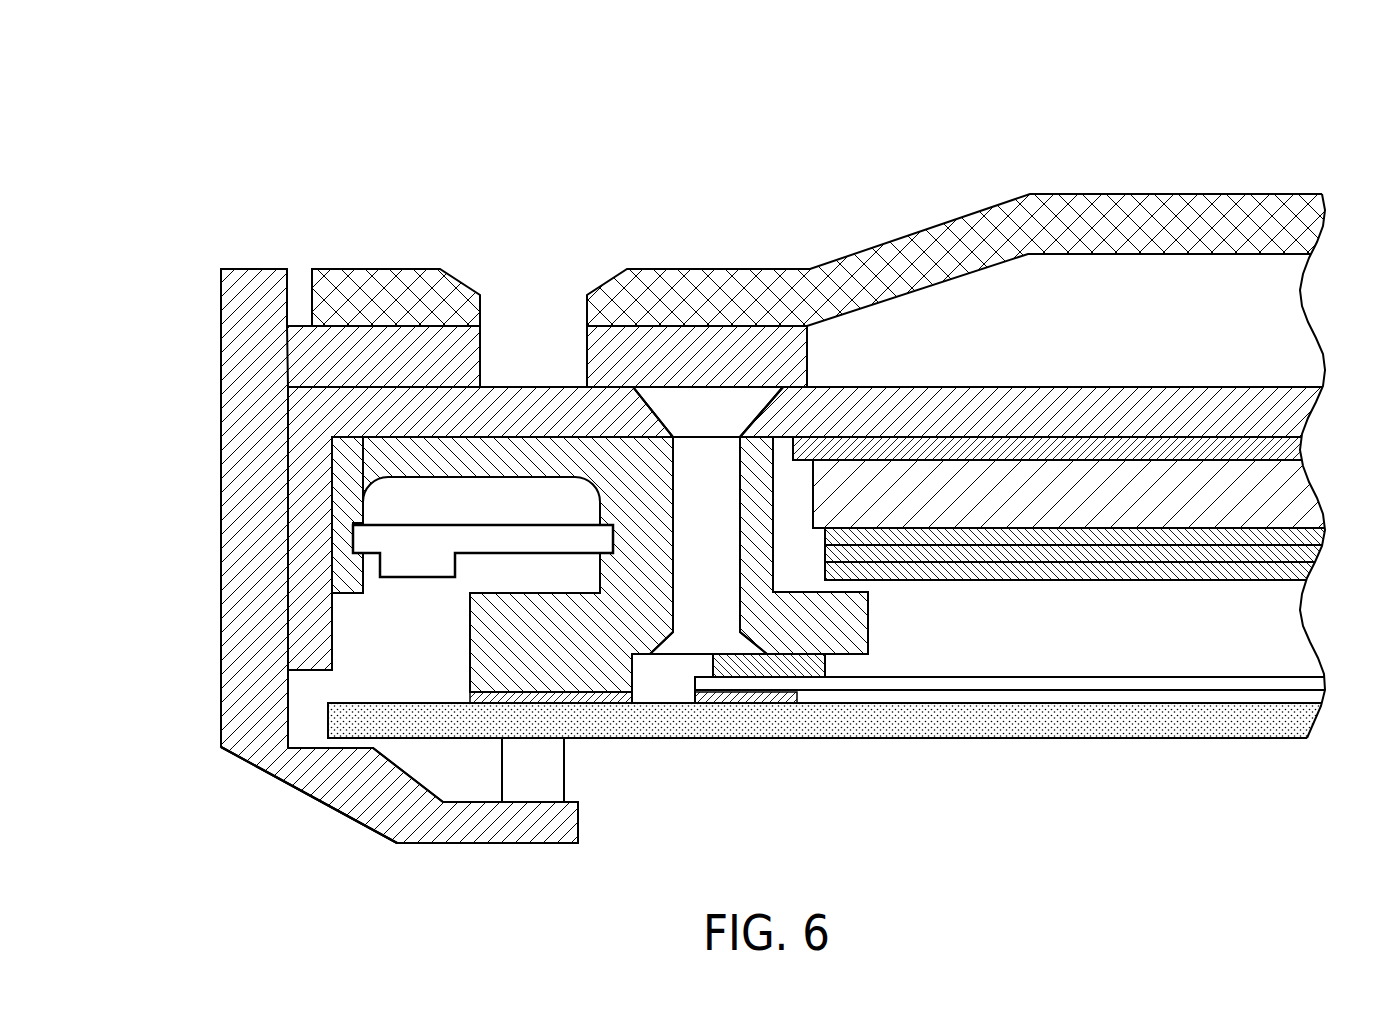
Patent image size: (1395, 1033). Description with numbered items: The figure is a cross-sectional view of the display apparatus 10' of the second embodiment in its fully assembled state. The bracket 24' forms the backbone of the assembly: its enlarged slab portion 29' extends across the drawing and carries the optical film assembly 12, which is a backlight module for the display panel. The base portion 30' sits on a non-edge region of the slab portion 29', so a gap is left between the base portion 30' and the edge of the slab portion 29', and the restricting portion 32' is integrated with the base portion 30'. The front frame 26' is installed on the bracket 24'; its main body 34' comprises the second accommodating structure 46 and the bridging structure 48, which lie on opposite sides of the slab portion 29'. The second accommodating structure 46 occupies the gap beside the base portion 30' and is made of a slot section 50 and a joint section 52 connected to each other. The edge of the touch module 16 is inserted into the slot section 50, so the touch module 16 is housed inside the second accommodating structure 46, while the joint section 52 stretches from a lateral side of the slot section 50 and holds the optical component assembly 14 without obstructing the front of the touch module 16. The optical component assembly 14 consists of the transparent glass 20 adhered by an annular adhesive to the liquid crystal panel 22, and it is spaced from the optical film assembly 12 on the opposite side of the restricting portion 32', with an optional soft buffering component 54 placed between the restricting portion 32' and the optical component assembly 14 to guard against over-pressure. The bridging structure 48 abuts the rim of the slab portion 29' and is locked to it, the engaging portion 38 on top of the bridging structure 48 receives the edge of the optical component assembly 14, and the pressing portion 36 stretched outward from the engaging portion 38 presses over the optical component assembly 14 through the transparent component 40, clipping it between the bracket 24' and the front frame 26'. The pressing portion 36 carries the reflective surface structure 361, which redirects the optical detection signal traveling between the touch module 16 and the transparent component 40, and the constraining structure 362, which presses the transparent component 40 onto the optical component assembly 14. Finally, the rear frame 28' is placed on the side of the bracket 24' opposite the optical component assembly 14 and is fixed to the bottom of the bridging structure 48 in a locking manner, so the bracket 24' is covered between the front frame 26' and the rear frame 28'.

The display apparatus 10' is at (1337, 64).
The optical film assembly 12 is at (1210, 482).
The optical component assembly 14 is at (1238, 833).
The touch module 16 is at (552, 538).
The transparent glass 20 is at (1100, 723).
The liquid crystal panel 22 is at (1180, 684).
The bracket 24' is at (814, 637).
The front frame 26' is at (431, 556).
The rear frame 28' is at (826, 227).
The slab portion 29' is at (814, 609).
The base portion 30' is at (774, 609).
The restricting portion 32' is at (804, 634).
The main body 34' is at (206, 508).
The pressing portion 36 is at (445, 825).
The engaging portion 38 is at (238, 708).
The transparent component 40 is at (546, 774).
The second accommodating structure 46 is at (507, 447).
The bridging structure 48 is at (262, 405).
The slot section 50 is at (349, 537).
The joint section 52 is at (545, 650).
The buffering component 54 is at (753, 668).
The reflective surface structure 361 is at (393, 771).
The constraining structure 362 is at (578, 825).